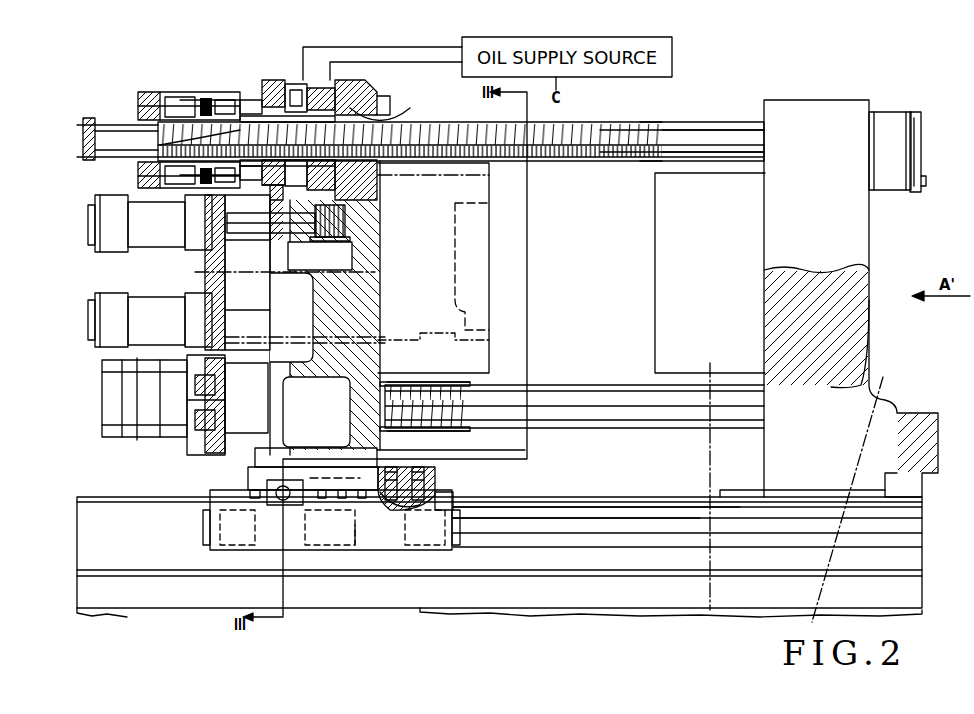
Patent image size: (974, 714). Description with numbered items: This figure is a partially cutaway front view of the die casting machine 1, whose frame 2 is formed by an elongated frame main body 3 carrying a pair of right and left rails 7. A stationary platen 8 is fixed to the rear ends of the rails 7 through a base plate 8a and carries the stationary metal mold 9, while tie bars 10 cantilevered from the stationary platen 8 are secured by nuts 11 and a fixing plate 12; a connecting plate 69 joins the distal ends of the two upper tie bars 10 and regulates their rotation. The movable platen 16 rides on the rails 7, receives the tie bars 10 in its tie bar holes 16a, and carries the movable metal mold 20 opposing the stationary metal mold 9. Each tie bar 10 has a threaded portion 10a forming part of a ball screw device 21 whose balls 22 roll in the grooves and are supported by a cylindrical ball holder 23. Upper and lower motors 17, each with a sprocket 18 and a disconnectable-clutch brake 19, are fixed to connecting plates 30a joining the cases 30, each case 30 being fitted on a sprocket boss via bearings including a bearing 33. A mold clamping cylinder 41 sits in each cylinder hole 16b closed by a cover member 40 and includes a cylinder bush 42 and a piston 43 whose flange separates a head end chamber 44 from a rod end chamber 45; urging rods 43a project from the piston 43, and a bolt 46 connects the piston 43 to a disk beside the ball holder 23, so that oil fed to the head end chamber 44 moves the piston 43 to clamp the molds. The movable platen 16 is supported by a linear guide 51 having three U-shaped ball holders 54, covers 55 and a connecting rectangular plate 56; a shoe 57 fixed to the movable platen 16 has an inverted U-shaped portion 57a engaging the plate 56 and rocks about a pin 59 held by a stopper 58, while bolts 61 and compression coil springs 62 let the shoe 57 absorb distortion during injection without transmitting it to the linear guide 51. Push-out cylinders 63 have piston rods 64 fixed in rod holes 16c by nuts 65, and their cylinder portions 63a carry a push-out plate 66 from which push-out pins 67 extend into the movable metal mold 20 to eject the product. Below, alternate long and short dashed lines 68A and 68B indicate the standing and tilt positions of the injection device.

The die casting machine 1 is at (705, 118).
The frame 2 is at (930, 499).
The frame main body 3 is at (596, 497).
The rails 7 is at (555, 497).
The stationary platen 8 is at (871, 230).
The base plate 8a is at (736, 490).
The stationary metal mold 9 is at (655, 296).
The tie bars 10 is at (644, 122).
The threaded portion 10a is at (604, 122).
The nuts 11 is at (884, 112).
The fixing plate 12 is at (922, 132).
The movable platen 16 is at (385, 103).
The tie bar holes 16a is at (377, 120).
The cylinder holes 16b is at (313, 83).
The rod holes 16c is at (266, 233).
The motors 17 is at (156, 434).
The sprocket 18 is at (212, 443).
The disconnectable-clutch brake 19 is at (242, 428).
The movable metal mold 20 is at (481, 264).
The ball screw device 21 is at (181, 97).
The balls 22 is at (160, 145).
The ball holder 23 is at (206, 98).
The case 30 is at (152, 92).
The connecting plate 30a is at (200, 458).
The bearing 33 is at (142, 92).
The cover member 40 is at (268, 80).
The mold clamping cylinder 41 is at (356, 81).
The cylinder bush 42 is at (378, 99).
The piston 43 is at (312, 80).
The urging rods 43a is at (253, 190).
The head end chamber 44 is at (330, 80).
The rod end chamber 45 is at (293, 84).
The bolt 46 is at (252, 100).
The linear guide 51 is at (213, 548).
The ball holders 54 is at (226, 530).
The covers 55 is at (203, 534).
The plate 56 is at (352, 550).
The shoe 57 is at (437, 472).
The inverted U-shaped portion 57a is at (396, 508).
The stopper 58 is at (274, 505).
The pin 59 is at (287, 500).
The bolt 61 is at (390, 467).
The compression coil spring 62 is at (404, 467).
The push-out cylinder 63 is at (106, 297).
The cylinder portion 63a is at (185, 290).
The piston rod 64 is at (240, 240).
The nut 65 is at (336, 250).
The push-out plate 66 is at (205, 262).
The push-out pins 67 is at (328, 336).
The alternate long and short dashed line 68A is at (710, 448).
The alternate long and short dashed line 68B is at (866, 444).
The connecting plate 69 is at (91, 118).